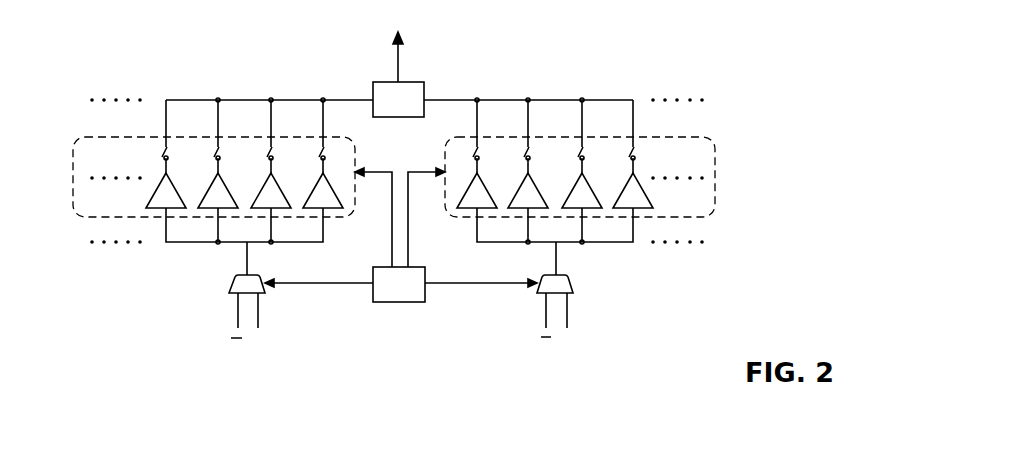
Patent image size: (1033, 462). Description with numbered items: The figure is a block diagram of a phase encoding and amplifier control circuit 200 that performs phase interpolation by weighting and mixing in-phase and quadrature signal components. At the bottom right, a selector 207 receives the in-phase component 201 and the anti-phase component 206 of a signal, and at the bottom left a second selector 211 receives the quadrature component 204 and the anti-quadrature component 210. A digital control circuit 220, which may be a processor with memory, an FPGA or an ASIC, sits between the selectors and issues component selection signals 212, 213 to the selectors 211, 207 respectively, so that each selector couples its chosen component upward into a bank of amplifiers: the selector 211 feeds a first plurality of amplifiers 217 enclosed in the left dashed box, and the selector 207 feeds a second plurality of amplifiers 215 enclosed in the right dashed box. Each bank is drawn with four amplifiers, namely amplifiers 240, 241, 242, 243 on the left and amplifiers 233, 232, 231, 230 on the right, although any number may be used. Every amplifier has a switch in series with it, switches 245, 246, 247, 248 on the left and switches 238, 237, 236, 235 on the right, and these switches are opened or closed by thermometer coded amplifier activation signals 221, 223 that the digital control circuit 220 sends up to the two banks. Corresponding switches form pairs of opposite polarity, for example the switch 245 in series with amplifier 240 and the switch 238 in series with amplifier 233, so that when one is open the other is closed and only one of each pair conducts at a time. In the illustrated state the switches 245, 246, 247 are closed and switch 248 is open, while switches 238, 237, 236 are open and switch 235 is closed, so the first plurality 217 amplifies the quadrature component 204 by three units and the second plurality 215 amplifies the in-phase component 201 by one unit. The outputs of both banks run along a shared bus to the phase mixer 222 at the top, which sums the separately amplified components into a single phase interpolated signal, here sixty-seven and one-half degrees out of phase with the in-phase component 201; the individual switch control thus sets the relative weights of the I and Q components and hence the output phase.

The phase encoding and amplifier control circuit 200 is at (668, 68).
The in-phase component 201 is at (574, 373).
The quadrature component 204 is at (263, 374).
The anti-phase component 206 is at (546, 371).
The selector 207 is at (583, 287).
The anti-quadrature component 210 is at (235, 373).
The selector 211 is at (226, 284).
The component selection signal 212 is at (318, 289).
The component selection signal 213 is at (482, 289).
The second plurality of amplifiers 215 is at (721, 202).
The first plurality of amplifiers 217 is at (66, 207).
The digital control circuit 220 is at (397, 304).
The amplifier activation signal 221 is at (384, 214).
The phase mixer 222 is at (421, 73).
The amplifier activation signal 223 is at (417, 215).
The amplifier 230 is at (643, 172).
The amplifier 231 is at (594, 184).
The amplifier 232 is at (541, 184).
The amplifier 233 is at (492, 184).
The switch 235 is at (626, 148).
The switch 236 is at (574, 148).
The switch 237 is at (520, 148).
The switch 238 is at (469, 148).
The amplifier 240 is at (182, 184).
The amplifier 241 is at (233, 184).
The amplifier 242 is at (286, 184).
The amplifier 243 is at (336, 174).
The switch 245 is at (158, 148).
The switch 246 is at (209, 148).
The switch 247 is at (264, 148).
The switch 248 is at (316, 148).